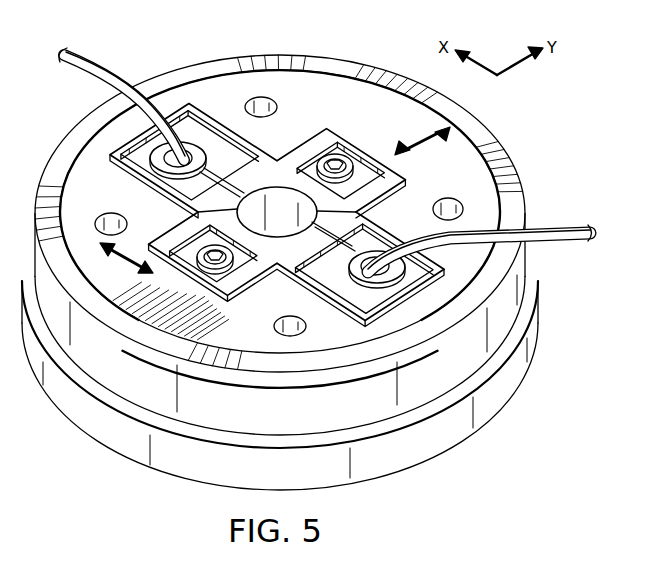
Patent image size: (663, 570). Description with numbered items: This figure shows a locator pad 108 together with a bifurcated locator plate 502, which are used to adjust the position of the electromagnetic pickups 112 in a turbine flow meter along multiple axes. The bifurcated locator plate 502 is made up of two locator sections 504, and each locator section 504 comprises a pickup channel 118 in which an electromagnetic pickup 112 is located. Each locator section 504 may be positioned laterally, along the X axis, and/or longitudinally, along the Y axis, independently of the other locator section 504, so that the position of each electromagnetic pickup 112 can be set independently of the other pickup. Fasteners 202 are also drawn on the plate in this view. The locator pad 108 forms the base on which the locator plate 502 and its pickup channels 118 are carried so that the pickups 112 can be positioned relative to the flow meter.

The locator pad 108 is at (423, 464).
The electromagnetic pickup 112 is at (198, 152).
The pickup channel 118 is at (165, 170).
The fastener 202 is at (345, 156).
The bifurcated locator plate 502 is at (289, 148).
The locator section 504 is at (135, 155).